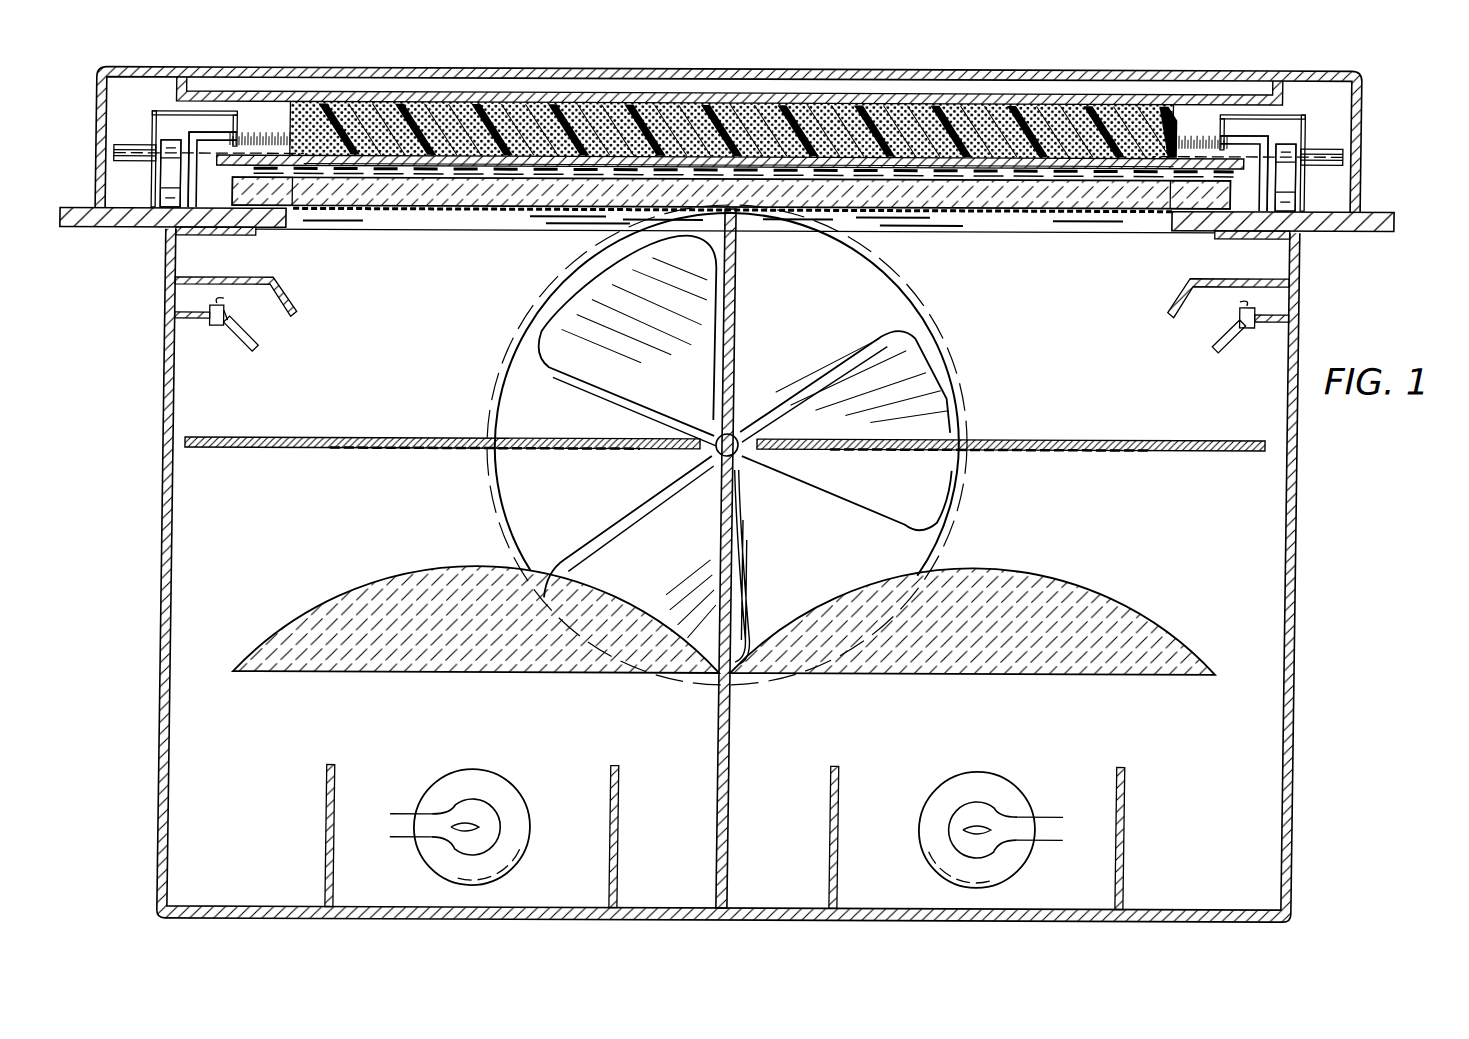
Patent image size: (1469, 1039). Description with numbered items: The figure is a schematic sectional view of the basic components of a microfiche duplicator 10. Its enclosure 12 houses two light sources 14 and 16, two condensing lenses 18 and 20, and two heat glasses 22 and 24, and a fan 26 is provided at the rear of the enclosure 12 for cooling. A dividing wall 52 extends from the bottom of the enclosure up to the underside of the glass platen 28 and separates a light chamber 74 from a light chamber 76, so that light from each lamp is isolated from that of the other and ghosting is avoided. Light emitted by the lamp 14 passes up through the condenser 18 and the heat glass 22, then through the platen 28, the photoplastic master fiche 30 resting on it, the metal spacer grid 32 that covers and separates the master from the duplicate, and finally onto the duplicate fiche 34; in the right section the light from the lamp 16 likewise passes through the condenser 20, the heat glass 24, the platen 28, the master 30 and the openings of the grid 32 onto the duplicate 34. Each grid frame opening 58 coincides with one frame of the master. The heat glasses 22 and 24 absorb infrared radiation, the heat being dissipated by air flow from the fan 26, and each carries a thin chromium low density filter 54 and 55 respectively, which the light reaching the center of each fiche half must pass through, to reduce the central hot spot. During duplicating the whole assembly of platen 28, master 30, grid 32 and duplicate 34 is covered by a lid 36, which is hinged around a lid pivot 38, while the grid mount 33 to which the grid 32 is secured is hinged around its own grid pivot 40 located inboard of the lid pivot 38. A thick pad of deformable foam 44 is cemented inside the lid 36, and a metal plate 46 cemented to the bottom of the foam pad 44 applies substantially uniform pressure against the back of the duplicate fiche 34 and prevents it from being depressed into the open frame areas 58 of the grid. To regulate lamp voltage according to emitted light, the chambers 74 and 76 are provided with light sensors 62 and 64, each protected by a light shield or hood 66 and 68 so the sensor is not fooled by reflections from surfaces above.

The duplicator 10 is at (138, 430).
The enclosure 12 is at (171, 243).
The light source 14 is at (441, 775).
The light source 16 is at (1012, 775).
The condensing lens 18 is at (292, 628).
The condensing lens 20 is at (1152, 606).
The heat glass 22 is at (272, 438).
The heat glass 24 is at (1195, 440).
The fan 26 is at (852, 352).
The platen 28 is at (498, 182).
The photoplastic master fiche 30 is at (1008, 170).
The metal spacer grid 32 is at (905, 170).
The grid mount 33 is at (262, 165).
The duplicate fiche 34 is at (758, 165).
The lid 36 is at (112, 58).
The lid pivot 38 is at (148, 112).
The grid pivot 40 is at (132, 178).
The deformable foam pad 44 is at (545, 104).
The metal plate 46 is at (322, 150).
The dividing wall 52 is at (733, 712).
The low density filter 54 is at (395, 452).
The low density filter 55 is at (1055, 452).
The frame opening 58 is at (405, 170).
The light sensor 62 is at (232, 318).
The light sensor 64 is at (1232, 322).
The light shield 66 is at (297, 292).
The light shield 68 is at (1180, 295).
The light chamber 74 is at (412, 388).
The light chamber 76 is at (1082, 391).